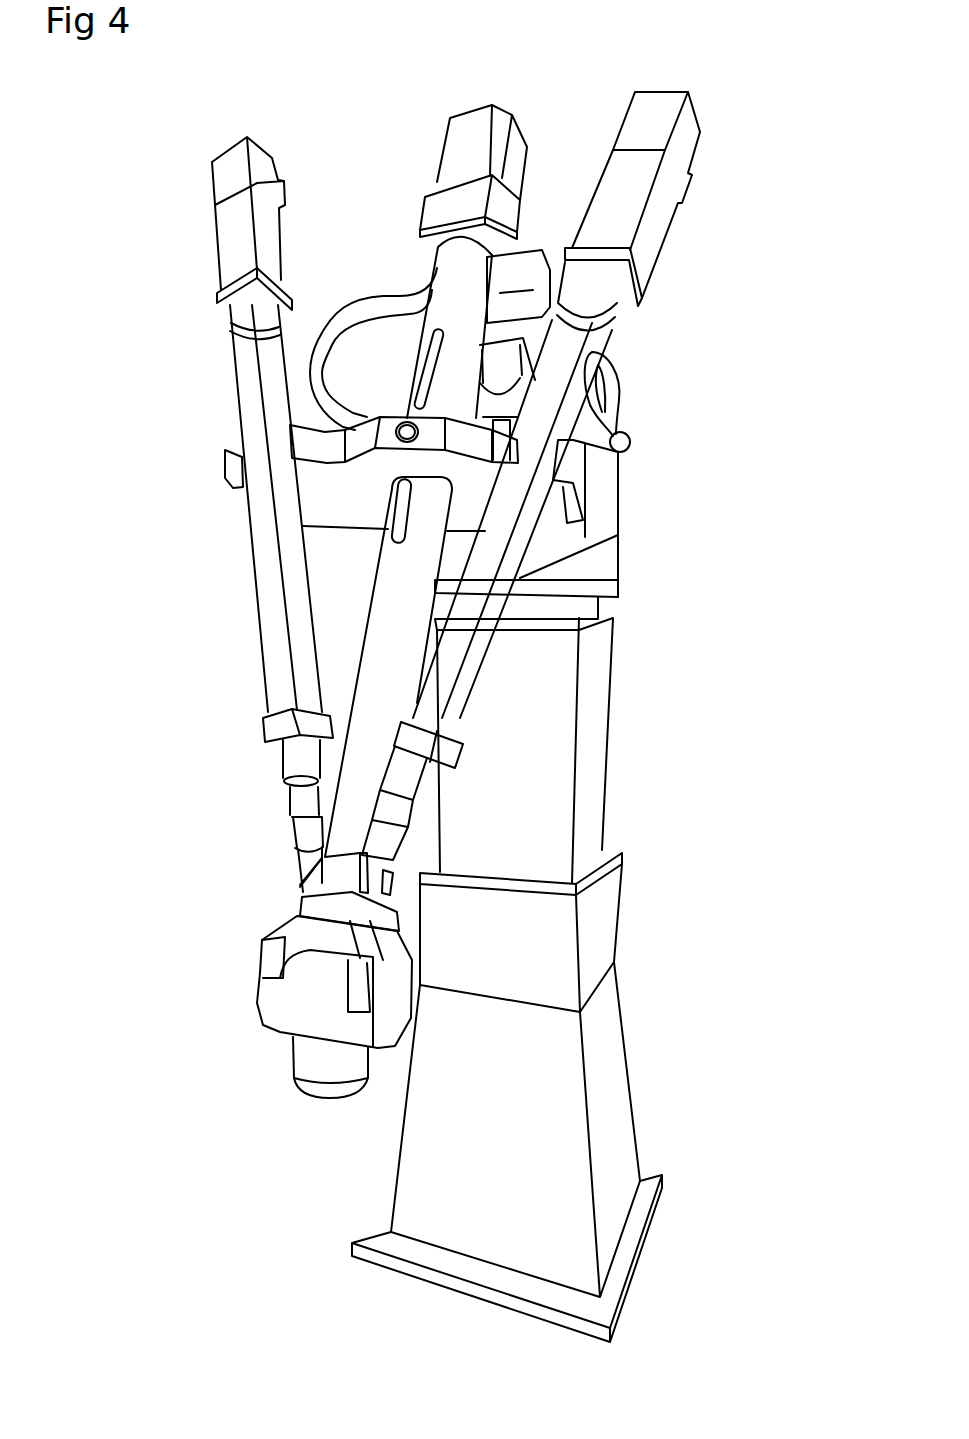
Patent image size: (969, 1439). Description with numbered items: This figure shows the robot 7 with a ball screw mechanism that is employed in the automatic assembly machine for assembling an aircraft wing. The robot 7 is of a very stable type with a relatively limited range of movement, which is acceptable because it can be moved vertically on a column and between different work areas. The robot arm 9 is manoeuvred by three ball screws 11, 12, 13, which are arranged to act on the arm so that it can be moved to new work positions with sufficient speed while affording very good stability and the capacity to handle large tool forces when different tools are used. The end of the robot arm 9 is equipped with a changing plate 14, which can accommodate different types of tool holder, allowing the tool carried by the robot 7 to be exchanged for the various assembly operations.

The robot 7 is at (635, 620).
The robot arm 9 is at (382, 598).
The ball screw 11 is at (236, 228).
The ball screw 12 is at (553, 300).
The ball screw 13 is at (663, 235).
The changing plate 14 is at (305, 1078).